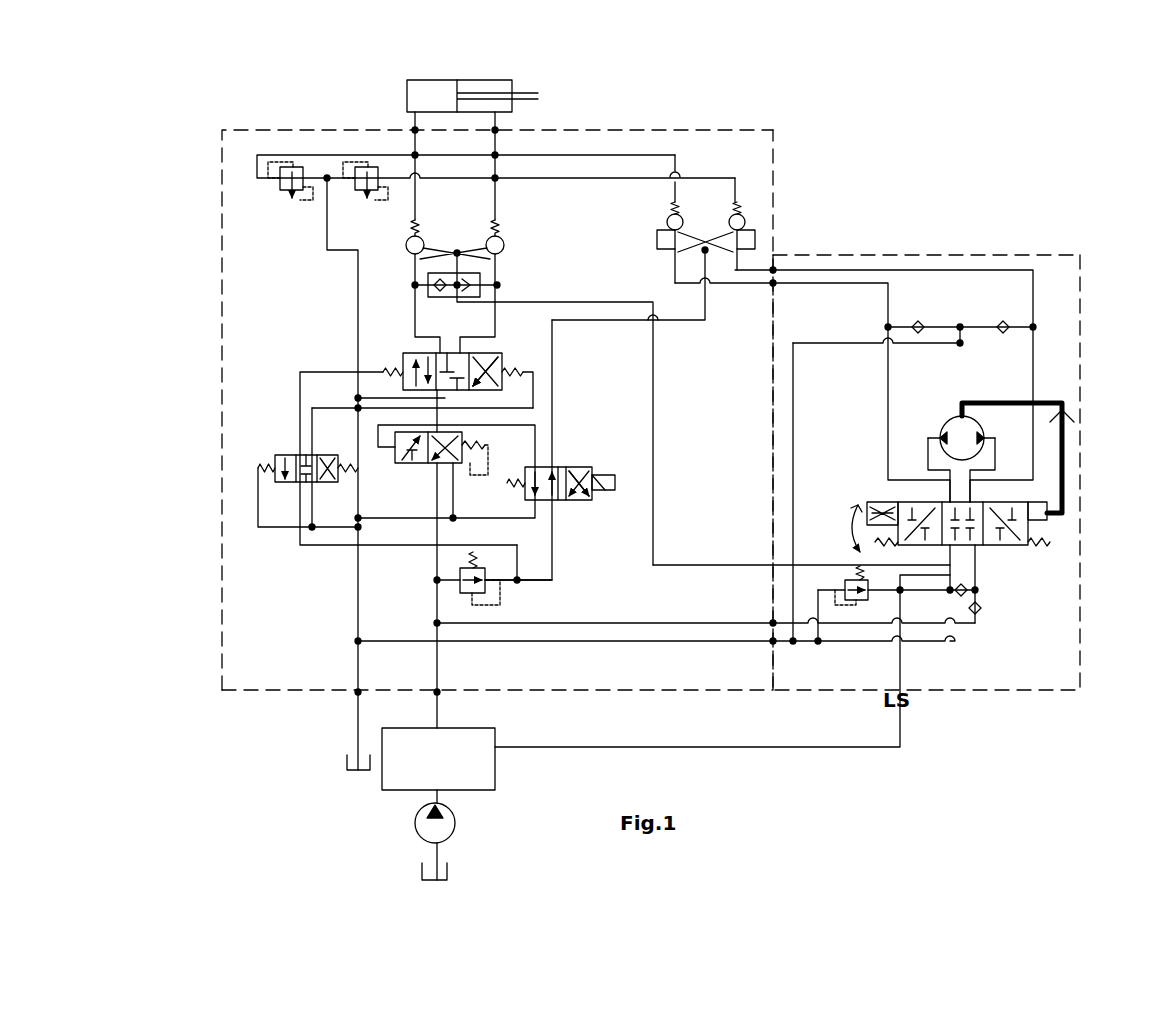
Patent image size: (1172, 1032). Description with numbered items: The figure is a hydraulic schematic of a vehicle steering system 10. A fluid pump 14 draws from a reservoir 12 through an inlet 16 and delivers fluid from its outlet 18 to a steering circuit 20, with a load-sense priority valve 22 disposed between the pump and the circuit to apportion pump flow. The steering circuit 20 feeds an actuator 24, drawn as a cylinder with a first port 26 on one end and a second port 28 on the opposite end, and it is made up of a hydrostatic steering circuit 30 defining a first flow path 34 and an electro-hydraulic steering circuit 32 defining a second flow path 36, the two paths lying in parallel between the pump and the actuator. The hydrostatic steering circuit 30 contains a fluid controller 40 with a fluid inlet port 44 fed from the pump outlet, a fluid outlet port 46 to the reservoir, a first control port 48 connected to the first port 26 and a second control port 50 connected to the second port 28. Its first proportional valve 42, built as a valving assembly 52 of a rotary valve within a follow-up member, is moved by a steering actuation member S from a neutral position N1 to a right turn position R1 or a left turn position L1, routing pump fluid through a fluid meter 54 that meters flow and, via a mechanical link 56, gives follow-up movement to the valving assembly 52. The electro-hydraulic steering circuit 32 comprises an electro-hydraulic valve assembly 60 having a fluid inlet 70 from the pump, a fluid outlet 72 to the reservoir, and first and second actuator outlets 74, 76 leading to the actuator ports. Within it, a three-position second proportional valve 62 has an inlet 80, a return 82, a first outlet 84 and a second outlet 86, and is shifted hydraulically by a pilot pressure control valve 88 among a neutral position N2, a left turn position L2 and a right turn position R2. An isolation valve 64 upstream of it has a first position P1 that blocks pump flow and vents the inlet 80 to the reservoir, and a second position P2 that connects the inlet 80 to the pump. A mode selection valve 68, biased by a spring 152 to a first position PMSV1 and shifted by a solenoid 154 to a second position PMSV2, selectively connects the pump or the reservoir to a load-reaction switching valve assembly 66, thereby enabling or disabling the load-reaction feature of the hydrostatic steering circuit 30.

The steering system 10 is at (1020, 200).
The reservoir 12 is at (447, 870).
The fluid pump 14 is at (455, 823).
The inlet 16 is at (428, 840).
The outlet 18 is at (440, 795).
The steering circuit 20 is at (836, 245).
The priority valve 22 is at (492, 728).
The actuator 24 is at (512, 88).
The first port 26 is at (415, 122).
The second port 28 is at (498, 120).
The hydrostatic steering circuit 30 is at (1088, 312).
The electro-hydraulic steering circuit 32 is at (190, 388).
The first flow path 34 is at (873, 300).
The second flow path 36 is at (507, 200).
The fluid controller 40 is at (1088, 490).
The first proportional valve 42 is at (850, 492).
The fluid inlet port 44 is at (772, 622).
The fluid outlet port 46 is at (772, 642).
The first control port 48 is at (772, 285).
The second control port 50 is at (775, 268).
The valving assembly 52 is at (998, 578).
The fluid meter 54 is at (945, 425).
The mechanical link 56 is at (1065, 425).
The electro-hydraulic valve assembly 60 is at (208, 598).
The second proportional valve 62 is at (398, 352).
The isolation valve 64 is at (415, 478).
The load-reaction switching valve assembly 66 is at (655, 238).
The mode selection valve 68 is at (592, 468).
The fluid inlet 70 is at (438, 690).
The fluid outlet 72 is at (357, 690).
The first actuator outlet 74 is at (412, 132).
The second actuator outlet 76 is at (498, 132).
The inlet 80 is at (445, 397).
The return 82 is at (460, 392).
The first outlet 84 is at (445, 352).
The second outlet 86 is at (461, 355).
The pilot pressure control valve 88 is at (295, 455).
The spring 152 is at (515, 482).
The solenoid 154 is at (592, 495).
The steering actuation member S is at (880, 500).
The neutral position N1 is at (985, 502).
The neutral position N2 is at (460, 395).
The left turn position L1 is at (895, 548).
The left turn position L2 is at (440, 392).
The right turn position R1 is at (1020, 548).
The right turn position R2 is at (498, 360).
The first position P1 is at (465, 440).
The second position P2 is at (398, 462).
The first position PMSV1 is at (570, 500).
The second position PMSV2 is at (552, 465).